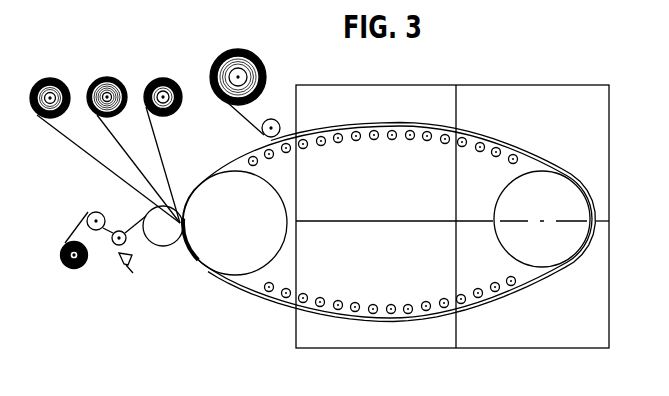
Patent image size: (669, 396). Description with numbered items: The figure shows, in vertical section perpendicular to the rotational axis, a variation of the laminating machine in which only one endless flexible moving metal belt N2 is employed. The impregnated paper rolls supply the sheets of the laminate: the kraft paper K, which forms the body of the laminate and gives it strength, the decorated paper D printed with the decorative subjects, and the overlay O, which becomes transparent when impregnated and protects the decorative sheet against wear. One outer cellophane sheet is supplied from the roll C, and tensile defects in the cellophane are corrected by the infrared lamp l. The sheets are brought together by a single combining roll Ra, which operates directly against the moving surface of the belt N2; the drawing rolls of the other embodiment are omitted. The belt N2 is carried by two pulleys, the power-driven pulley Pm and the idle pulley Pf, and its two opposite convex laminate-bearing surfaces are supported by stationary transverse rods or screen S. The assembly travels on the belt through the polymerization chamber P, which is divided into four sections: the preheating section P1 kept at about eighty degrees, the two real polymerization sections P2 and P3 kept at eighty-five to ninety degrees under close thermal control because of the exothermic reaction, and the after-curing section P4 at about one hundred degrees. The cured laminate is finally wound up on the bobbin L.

The kraft paper K is at (47, 78).
The decorated paper D is at (104, 77).
The overlay O is at (161, 78).
The bobbin L is at (237, 49).
The cellophane roll C is at (72, 270).
The infrared lamp l is at (127, 273).
The combining roll Ra is at (163, 226).
The idle pulley Pf is at (235, 223).
The power-driven pulley Pm is at (542, 219).
The polymerization chamber P is at (440, 85).
The preheating section P1 is at (377, 338).
The polymerization section P2 is at (532, 334).
The polymerization section P3 is at (527, 101).
The after-curing section P4 is at (377, 101).
The screen S is at (340, 139).
The endless metal belt N2 is at (423, 136).